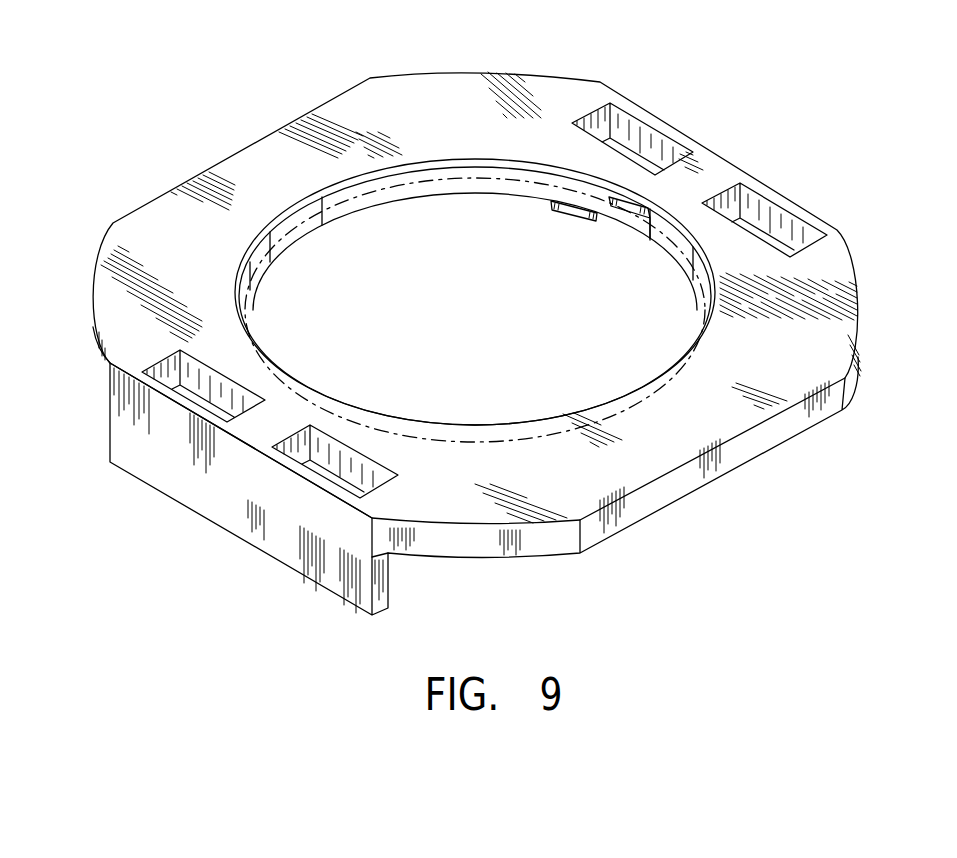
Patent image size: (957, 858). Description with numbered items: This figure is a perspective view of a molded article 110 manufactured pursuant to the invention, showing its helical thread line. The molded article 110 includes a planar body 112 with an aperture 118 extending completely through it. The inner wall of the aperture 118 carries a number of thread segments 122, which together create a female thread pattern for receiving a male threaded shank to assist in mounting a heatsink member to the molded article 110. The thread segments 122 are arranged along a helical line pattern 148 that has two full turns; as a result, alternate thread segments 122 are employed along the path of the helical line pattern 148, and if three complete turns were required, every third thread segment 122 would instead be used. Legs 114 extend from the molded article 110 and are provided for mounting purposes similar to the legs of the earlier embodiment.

The molded article 110 is at (477, 321).
The planar body 112 is at (537, 92).
The legs 114 is at (300, 538).
The aperture 118 is at (475, 292).
The thread segments 122 is at (573, 220).
The helical line pattern 148 is at (433, 177).